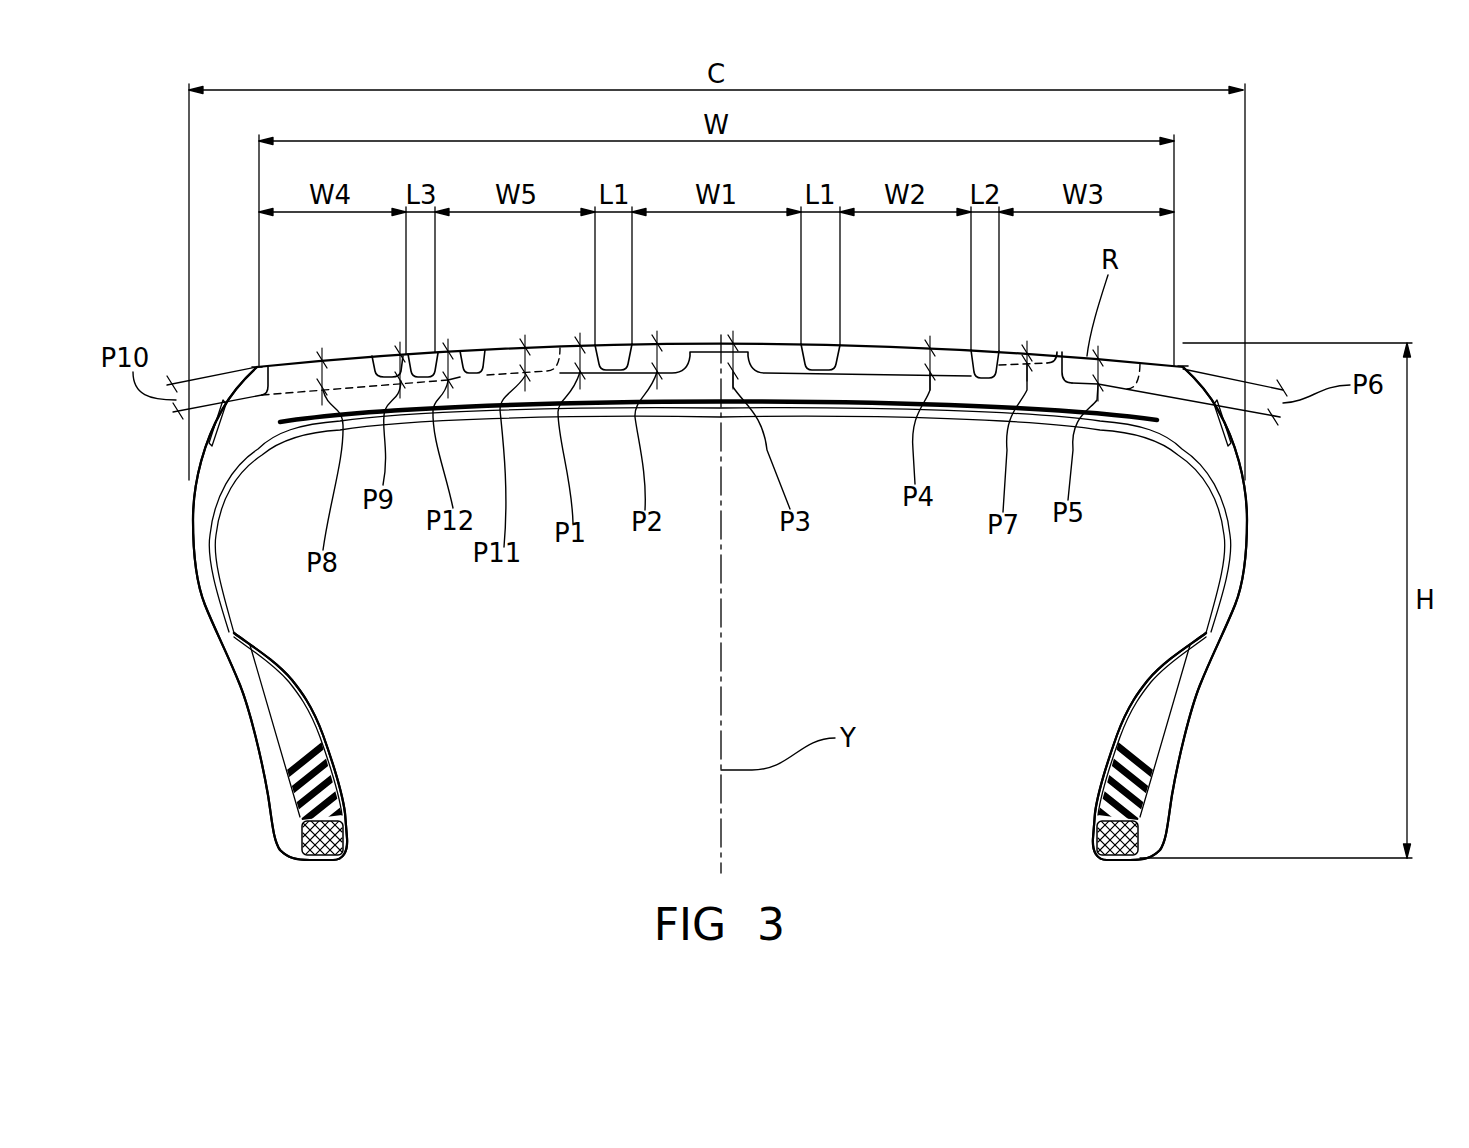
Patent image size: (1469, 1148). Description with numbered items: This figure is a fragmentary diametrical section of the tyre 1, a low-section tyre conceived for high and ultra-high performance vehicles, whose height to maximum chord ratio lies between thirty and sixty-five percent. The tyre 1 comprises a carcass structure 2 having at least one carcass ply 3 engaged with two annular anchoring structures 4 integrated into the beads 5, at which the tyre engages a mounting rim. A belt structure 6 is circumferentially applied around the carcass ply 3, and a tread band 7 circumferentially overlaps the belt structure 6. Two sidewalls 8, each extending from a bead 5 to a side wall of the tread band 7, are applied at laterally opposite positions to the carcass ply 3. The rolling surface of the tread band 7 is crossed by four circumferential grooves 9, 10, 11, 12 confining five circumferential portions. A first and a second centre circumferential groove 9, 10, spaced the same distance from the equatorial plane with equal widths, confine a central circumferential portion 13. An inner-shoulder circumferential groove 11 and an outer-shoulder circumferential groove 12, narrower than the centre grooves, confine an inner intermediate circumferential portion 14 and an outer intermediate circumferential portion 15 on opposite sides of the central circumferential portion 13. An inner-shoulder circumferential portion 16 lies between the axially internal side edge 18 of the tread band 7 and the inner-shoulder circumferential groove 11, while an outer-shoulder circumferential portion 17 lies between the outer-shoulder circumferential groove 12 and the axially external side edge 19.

The tyre 1 is at (1335, 232).
The carcass structure 2 is at (320, 727).
The carcass ply 3 is at (233, 617).
The annular anchoring structures 4 is at (338, 830).
The beads 5 is at (318, 864).
The belt structure 6 is at (843, 404).
The tread band 7 is at (1153, 362).
The sidewalls 8 is at (190, 545).
The first centre circumferential groove 9 is at (613, 356).
The second centre circumferential groove 10 is at (820, 356).
The inner-shoulder circumferential groove 11 is at (985, 357).
The outer-shoulder circumferential groove 12 is at (418, 365).
The central circumferential portion 13 is at (705, 342).
The inner intermediate circumferential portion 14 is at (897, 343).
The outer intermediate circumferential portion 15 is at (548, 342).
The inner-shoulder circumferential portion 16 is at (1120, 353).
The outer-shoulder circumferential portion 17 is at (345, 352).
The axially internal side edge 18 is at (1177, 368).
The axially external side edge 19 is at (257, 366).